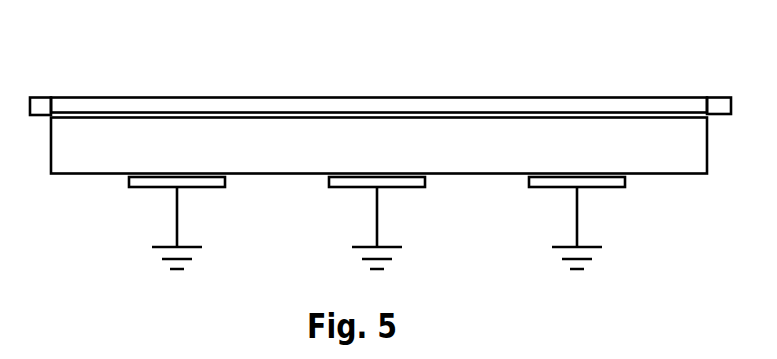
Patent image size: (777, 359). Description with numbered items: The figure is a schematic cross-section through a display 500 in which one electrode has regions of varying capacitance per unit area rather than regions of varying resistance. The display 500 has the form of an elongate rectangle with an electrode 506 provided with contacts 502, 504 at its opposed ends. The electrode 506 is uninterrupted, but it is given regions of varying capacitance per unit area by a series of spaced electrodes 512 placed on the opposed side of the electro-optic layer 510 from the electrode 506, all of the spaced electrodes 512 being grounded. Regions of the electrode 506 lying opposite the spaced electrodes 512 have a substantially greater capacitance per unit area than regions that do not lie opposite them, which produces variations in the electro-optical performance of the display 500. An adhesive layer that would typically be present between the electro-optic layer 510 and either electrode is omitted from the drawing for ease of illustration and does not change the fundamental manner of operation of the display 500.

The display 500 is at (449, 58).
The contact 502 is at (38, 108).
The contact 504 is at (720, 107).
The electrode 506 is at (160, 106).
The electro-optic layer 510 is at (190, 148).
The spaced electrodes 512 is at (203, 182).